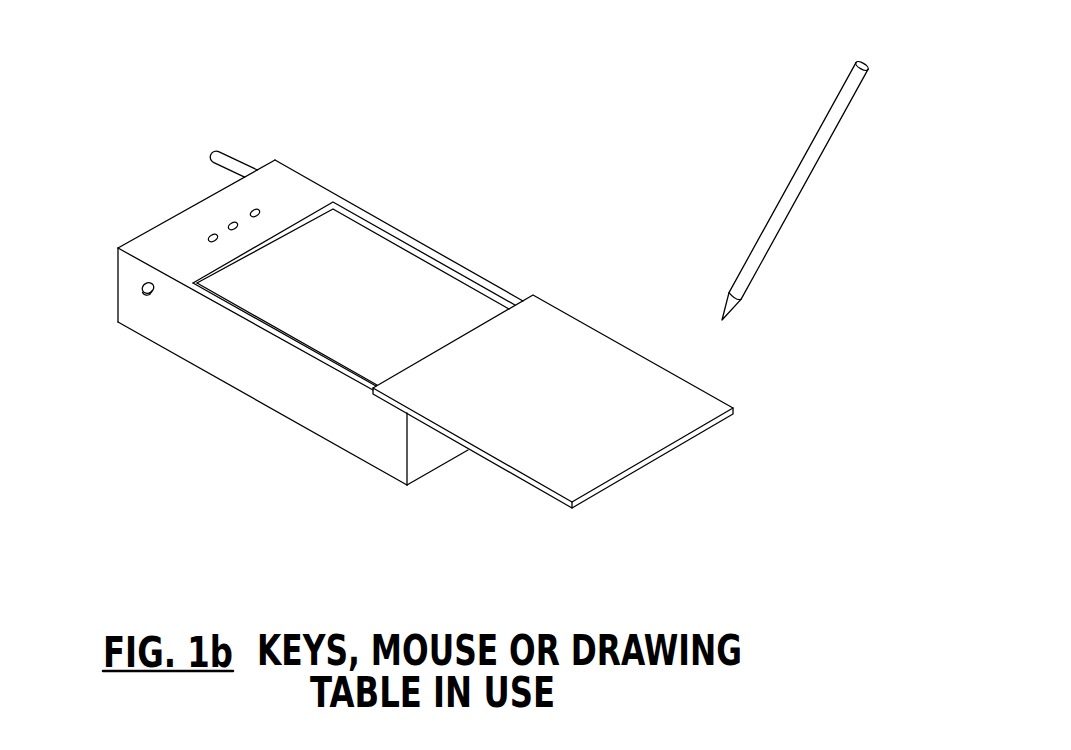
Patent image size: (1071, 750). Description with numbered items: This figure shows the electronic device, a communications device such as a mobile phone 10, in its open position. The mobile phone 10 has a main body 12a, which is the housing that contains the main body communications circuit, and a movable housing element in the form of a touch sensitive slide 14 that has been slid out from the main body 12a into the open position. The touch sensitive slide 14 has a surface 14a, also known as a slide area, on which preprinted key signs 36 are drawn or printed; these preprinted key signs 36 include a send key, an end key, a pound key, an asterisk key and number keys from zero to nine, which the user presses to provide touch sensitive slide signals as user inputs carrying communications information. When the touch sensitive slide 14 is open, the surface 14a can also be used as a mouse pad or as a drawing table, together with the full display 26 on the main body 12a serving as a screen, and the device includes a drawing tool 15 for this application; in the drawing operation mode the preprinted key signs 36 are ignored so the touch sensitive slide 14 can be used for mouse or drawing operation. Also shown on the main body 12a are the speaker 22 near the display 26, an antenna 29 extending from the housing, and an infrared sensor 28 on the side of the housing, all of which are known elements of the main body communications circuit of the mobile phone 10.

The mobile phone 10 is at (168, 63).
The main body 12a is at (235, 350).
The touch sensitive slide 14 is at (469, 417).
The surface 14a is at (600, 338).
The drawing tool 15 is at (762, 232).
The speaker 22 is at (258, 209).
The display 26 is at (327, 242).
The infrared sensor 28 is at (145, 302).
The antenna 29 is at (210, 168).
The preprinted key signs 36 is at (603, 472).